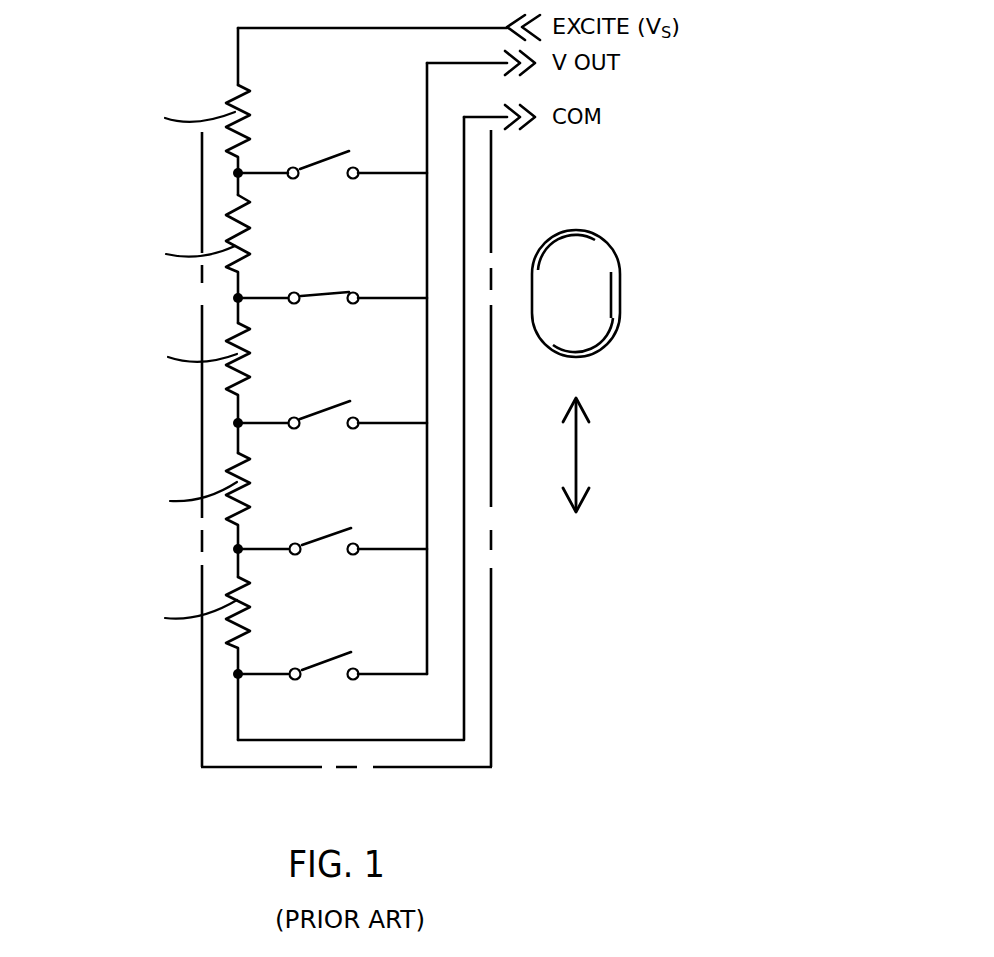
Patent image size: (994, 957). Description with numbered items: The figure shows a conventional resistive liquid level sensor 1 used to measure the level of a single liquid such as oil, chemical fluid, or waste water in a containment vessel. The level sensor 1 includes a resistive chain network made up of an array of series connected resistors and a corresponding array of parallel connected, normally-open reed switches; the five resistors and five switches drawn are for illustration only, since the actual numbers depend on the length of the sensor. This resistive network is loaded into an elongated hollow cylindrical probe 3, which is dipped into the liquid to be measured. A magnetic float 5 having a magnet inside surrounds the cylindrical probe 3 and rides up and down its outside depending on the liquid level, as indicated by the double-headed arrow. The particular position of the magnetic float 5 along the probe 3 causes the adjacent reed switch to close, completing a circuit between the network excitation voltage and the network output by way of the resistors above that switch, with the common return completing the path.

The level sensor 1 is at (163, 410).
The cylindrical probe 3 is at (492, 648).
The magnetic float 5 is at (613, 253).